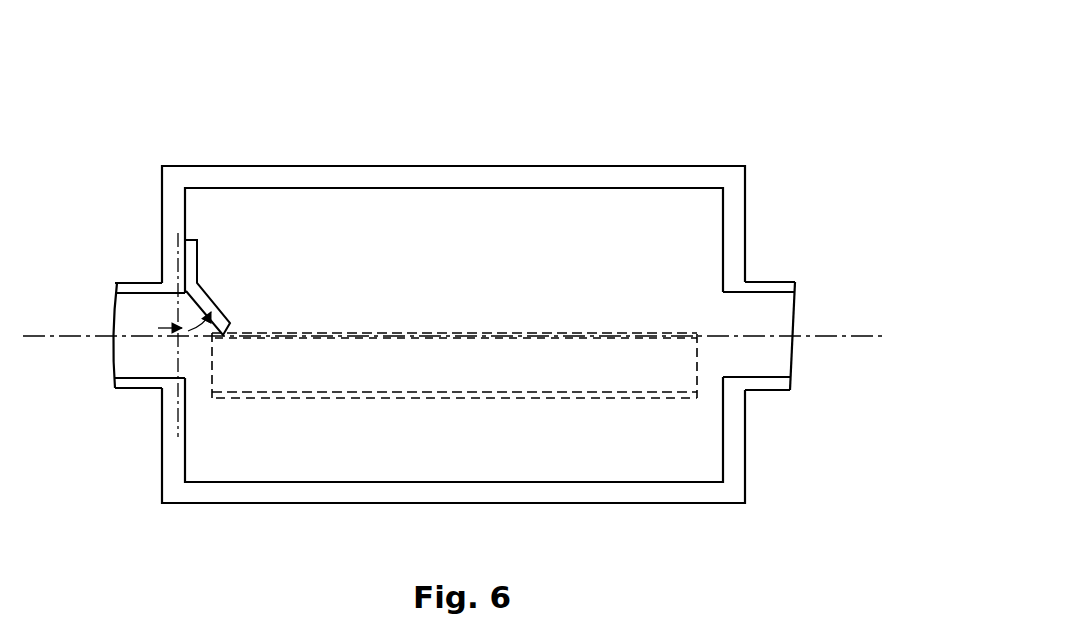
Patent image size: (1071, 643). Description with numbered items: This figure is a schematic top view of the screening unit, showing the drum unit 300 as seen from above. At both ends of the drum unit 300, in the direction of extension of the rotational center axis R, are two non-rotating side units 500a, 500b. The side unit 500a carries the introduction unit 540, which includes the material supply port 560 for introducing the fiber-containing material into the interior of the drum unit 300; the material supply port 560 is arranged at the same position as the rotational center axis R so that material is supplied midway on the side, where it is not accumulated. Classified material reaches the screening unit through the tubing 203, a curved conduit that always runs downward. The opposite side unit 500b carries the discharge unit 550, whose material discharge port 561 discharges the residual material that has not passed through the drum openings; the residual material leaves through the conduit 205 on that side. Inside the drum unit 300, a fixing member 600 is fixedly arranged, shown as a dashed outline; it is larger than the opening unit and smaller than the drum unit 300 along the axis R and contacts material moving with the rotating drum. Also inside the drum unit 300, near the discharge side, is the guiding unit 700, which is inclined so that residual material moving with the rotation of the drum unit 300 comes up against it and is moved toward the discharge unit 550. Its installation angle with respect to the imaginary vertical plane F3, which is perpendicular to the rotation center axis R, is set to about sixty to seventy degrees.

The drum unit 300 is at (853, 55).
The side unit 500b is at (170, 192).
The side unit 500a is at (741, 191).
The inlet pipe 205 is at (122, 306).
The material discharge port 561 is at (153, 306).
The tubing 203 is at (783, 306).
The material supply port 560 is at (755, 308).
The rotational center axis R is at (69, 340).
The imaginary vertical plane F3 is at (174, 421).
The guiding unit 700 is at (214, 309).
The discharge unit 550 is at (151, 360).
The introduction unit 540 is at (758, 361).
The fixing member 600 is at (670, 348).